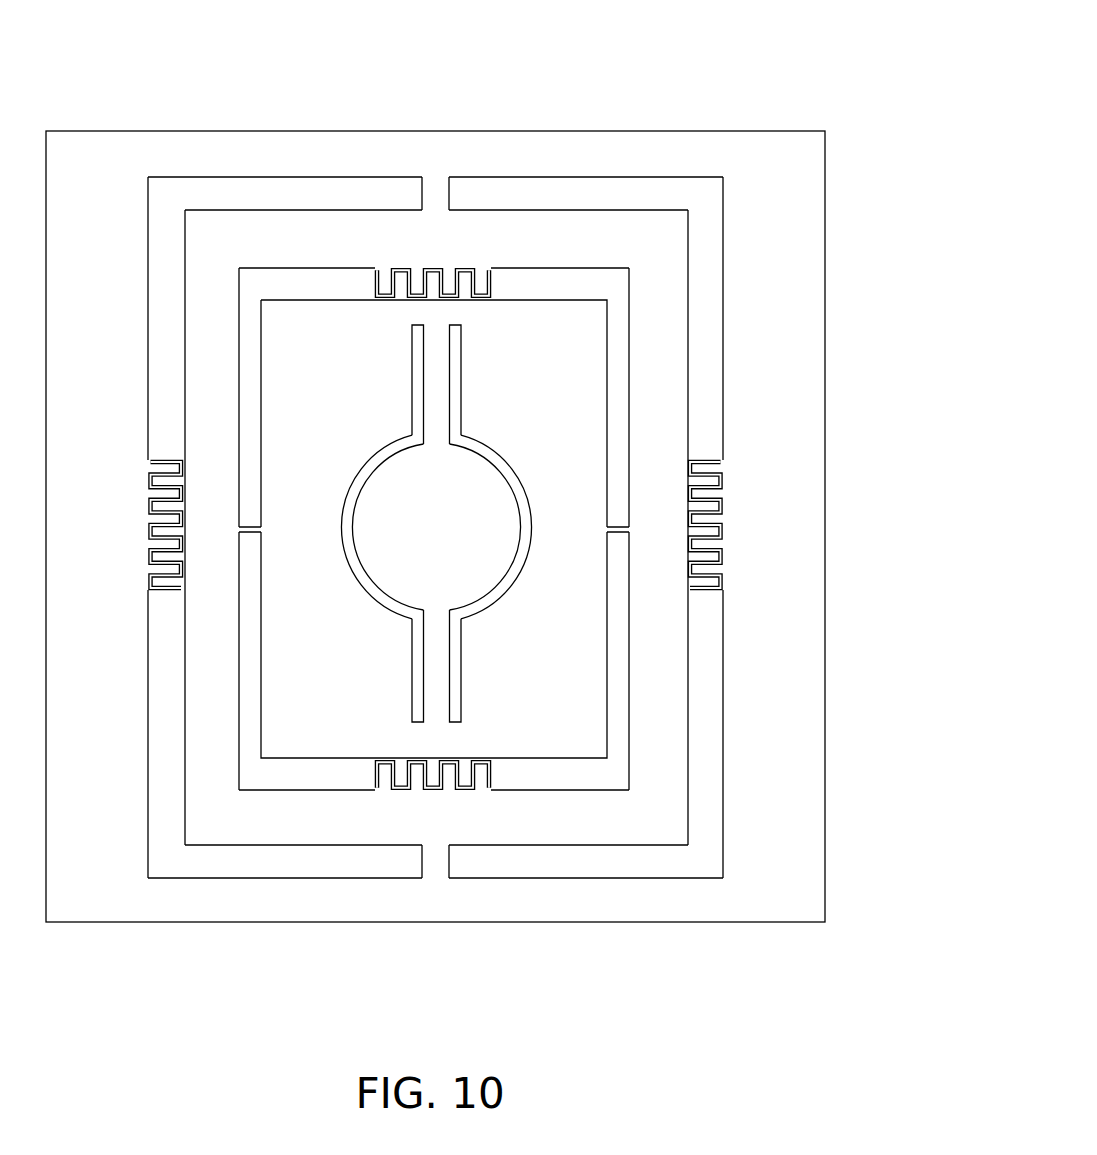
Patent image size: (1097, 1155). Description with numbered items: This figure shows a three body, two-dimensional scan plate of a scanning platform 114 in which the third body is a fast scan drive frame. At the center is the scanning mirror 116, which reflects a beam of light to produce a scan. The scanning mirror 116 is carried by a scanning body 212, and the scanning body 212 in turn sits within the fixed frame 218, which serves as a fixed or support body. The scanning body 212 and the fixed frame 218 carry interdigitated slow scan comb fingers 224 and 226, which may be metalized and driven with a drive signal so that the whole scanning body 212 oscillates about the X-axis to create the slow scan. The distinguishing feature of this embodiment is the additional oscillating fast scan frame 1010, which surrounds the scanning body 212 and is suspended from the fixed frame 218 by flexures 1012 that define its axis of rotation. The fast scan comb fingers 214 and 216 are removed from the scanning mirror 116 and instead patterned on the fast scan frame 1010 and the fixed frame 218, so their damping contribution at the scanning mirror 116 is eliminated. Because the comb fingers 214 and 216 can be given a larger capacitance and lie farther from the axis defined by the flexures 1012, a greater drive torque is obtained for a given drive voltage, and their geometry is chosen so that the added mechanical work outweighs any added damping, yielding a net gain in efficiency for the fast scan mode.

The scanning platform 114 is at (765, 91).
The scanning mirror 116 is at (455, 536).
The scanning body 212 is at (349, 394).
The fast scan comb fingers 214 is at (180, 581).
The fast scan comb fingers 216 is at (178, 592).
The fixed frame 218 is at (807, 183).
The slow scan comb fingers 224 is at (434, 532).
The slow scan comb fingers 226 is at (492, 277).
The fast scan frame 1010 is at (500, 527).
The flexures 1012 is at (449, 194).